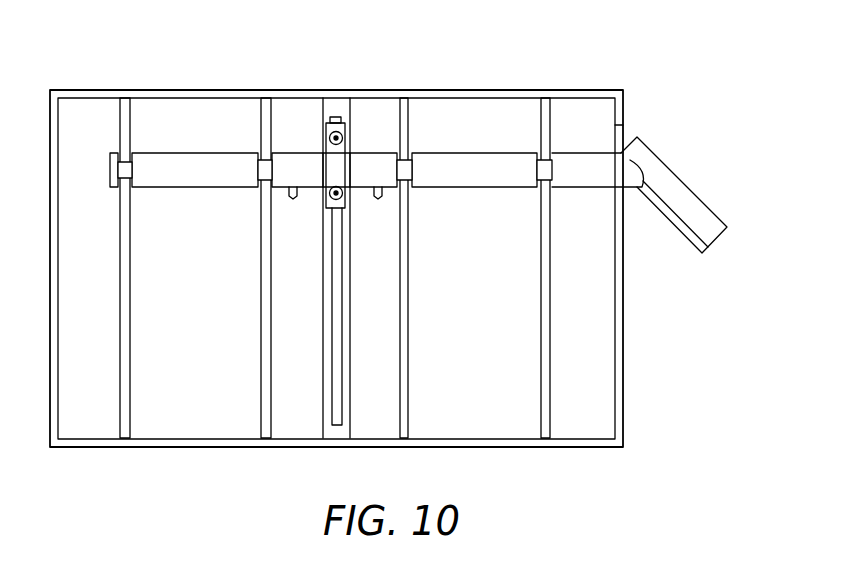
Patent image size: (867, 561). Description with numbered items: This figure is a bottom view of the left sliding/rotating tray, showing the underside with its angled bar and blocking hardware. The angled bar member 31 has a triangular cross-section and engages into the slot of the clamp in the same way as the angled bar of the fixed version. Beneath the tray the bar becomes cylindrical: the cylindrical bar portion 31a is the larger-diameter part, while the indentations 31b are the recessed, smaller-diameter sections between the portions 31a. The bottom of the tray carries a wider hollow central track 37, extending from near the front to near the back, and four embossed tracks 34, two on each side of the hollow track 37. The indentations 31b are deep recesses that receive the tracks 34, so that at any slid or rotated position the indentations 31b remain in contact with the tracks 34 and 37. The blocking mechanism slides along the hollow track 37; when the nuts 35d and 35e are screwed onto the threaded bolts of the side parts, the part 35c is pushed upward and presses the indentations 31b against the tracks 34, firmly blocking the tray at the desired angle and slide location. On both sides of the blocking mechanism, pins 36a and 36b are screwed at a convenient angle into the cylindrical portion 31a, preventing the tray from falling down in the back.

The angled bar member 31 is at (682, 180).
The cylindrical bar portion 31a is at (193, 162).
The indentations 31b is at (124, 160).
The embossed tracks 34 is at (130, 353).
The blocking mechanism part 35c is at (338, 157).
The nut 35d is at (336, 119).
The nut 35e is at (340, 202).
The pin 36a is at (377, 199).
The pin 36b is at (293, 199).
The hollow track 37 is at (335, 413).